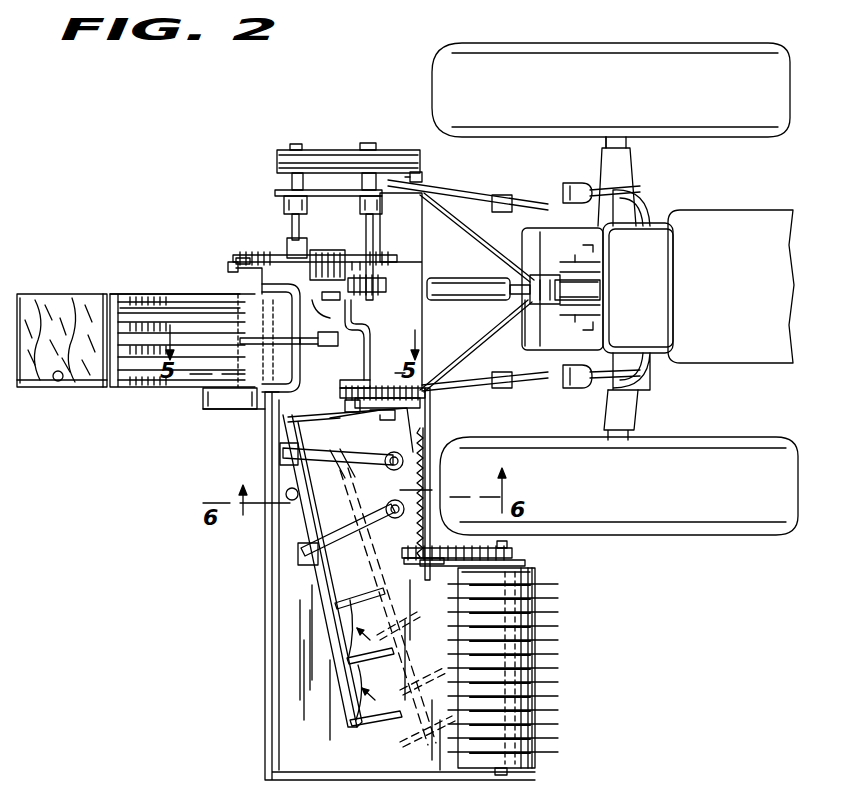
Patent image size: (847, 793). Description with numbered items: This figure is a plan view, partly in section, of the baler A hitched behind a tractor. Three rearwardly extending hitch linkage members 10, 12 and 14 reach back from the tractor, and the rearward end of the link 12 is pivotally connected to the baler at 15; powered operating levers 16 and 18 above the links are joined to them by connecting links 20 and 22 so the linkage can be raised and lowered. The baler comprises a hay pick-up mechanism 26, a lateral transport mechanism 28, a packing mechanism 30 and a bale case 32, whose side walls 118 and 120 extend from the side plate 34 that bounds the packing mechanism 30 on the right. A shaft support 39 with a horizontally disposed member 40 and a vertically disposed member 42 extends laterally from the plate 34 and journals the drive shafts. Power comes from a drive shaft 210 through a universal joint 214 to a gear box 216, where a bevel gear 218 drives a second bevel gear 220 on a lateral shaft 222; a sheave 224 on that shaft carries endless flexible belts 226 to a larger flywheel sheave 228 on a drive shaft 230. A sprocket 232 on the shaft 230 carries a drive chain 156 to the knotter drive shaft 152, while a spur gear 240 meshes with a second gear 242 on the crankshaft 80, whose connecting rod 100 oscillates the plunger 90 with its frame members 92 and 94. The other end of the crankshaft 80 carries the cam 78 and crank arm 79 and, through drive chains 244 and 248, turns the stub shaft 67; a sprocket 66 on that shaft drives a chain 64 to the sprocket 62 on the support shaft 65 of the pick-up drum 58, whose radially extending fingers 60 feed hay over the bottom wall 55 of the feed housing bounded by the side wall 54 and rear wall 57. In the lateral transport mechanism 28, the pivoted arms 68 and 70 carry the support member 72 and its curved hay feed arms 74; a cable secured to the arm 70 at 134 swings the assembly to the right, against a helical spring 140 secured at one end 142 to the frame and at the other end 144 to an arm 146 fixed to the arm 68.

The hitch linkage member 10 is at (528, 350).
The hitch linkage member 12 is at (522, 232).
The hitch linkage member 14 is at (482, 255).
The pivotal connection 15 is at (423, 180).
The powered operating lever 16 is at (630, 415).
The powered operating lever 18 is at (624, 200).
The connecting link 20 is at (550, 392).
The connecting link 22 is at (560, 185).
The hay pick-up mechanism 26 is at (545, 646).
The lateral transport mechanism 28 is at (300, 621).
The packing mechanism 30 is at (246, 402).
The bale case 32 is at (115, 290).
The side plate 34 is at (235, 300).
The shaft support 39 is at (445, 200).
The horizontally disposed member 40 is at (401, 291).
The vertically disposed member 42 is at (360, 210).
The side wall 54 is at (432, 620).
The bottom wall 55 is at (370, 675).
The rear wall 57 is at (265, 728).
The pick up drum 58 is at (517, 718).
The radially extending fingers 60 is at (547, 626).
The sprocket 62 is at (530, 560).
The sprocket chain 64 is at (470, 548).
The support shaft 65 is at (508, 546).
The sprocket 66 is at (428, 540).
The powered stub shaft 67 is at (385, 420).
The arm 68 is at (325, 578).
The arm 70 is at (353, 456).
The support member 72 is at (332, 647).
The hay feed arms 74 is at (352, 662).
The cam 78 is at (420, 418).
The crank arm 79 is at (426, 437).
The crankshaft 80 is at (362, 383).
The plunger 90 is at (242, 342).
The frame member 92 is at (298, 360).
The frame member 94 is at (330, 306).
The connecting rod 100 is at (345, 338).
The side wall 118 is at (60, 382).
The side wall 120 is at (82, 290).
The cable attachment point 134 is at (288, 470).
The helical spring 140 is at (432, 490).
The spring end 142 is at (432, 440).
The spring end 144 is at (368, 648).
The arm 146 is at (394, 506).
The knotter drive shaft 152 is at (236, 272).
The drive chain 156 is at (242, 257).
The drive shaft 210 is at (358, 262).
The universal joint 214 is at (333, 250).
The gear box 216 is at (285, 232).
The bevel gear 218 is at (228, 266).
The second bevel gear 220 is at (272, 258).
The shaft 222 is at (275, 183).
The sheave 224 is at (283, 149).
The endless flexible belts 226 is at (322, 150).
The sheave 228 is at (406, 150).
The drive shaft 230 is at (370, 143).
The sprocket 232 is at (400, 262).
The spur gear 240 is at (400, 330).
The second gear 242 is at (348, 336).
The drive chain 244 is at (340, 408).
The drive chain 248 is at (450, 405).
The baler A is at (148, 294).